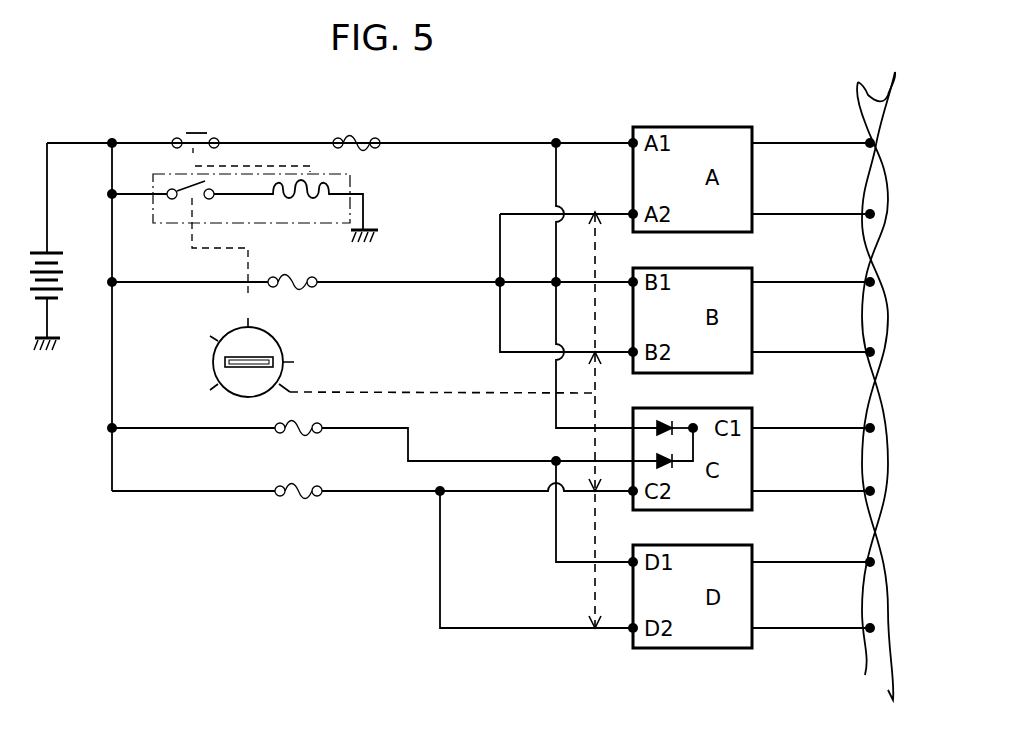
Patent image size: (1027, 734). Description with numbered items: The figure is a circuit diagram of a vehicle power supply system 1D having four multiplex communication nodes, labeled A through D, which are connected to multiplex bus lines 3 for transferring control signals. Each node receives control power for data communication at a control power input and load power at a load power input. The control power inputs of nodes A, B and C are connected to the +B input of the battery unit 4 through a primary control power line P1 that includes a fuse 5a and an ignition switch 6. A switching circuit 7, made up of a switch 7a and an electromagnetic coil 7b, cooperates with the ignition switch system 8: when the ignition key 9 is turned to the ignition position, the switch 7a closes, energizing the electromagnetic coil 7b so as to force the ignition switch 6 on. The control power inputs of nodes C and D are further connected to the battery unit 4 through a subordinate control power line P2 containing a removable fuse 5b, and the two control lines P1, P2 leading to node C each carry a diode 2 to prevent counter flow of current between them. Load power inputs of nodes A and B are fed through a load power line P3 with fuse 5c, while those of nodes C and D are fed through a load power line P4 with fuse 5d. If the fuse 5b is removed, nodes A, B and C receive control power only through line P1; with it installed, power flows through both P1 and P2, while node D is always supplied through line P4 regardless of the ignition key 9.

The power supply system 1D is at (323, 515).
The diode 2 is at (655, 426).
The multiplex bus lines 3 is at (878, 84).
The battery unit 4 is at (66, 272).
The fuse 5a is at (356, 143).
The removable fuse 5b is at (284, 433).
The fuse 5c is at (304, 284).
The fuse 5d is at (284, 496).
The ignition switch 6 is at (200, 133).
The switching circuit 7 is at (267, 228).
The switch 7a is at (185, 203).
The electromagnetic coil 7b is at (320, 205).
The ignition switch system 8 is at (280, 345).
The ignition key 9 is at (248, 370).
The primary control power line P1 is at (460, 143).
The subordinate control power line P2 is at (383, 430).
The load power line P3 is at (478, 282).
The load power line P4 is at (392, 493).